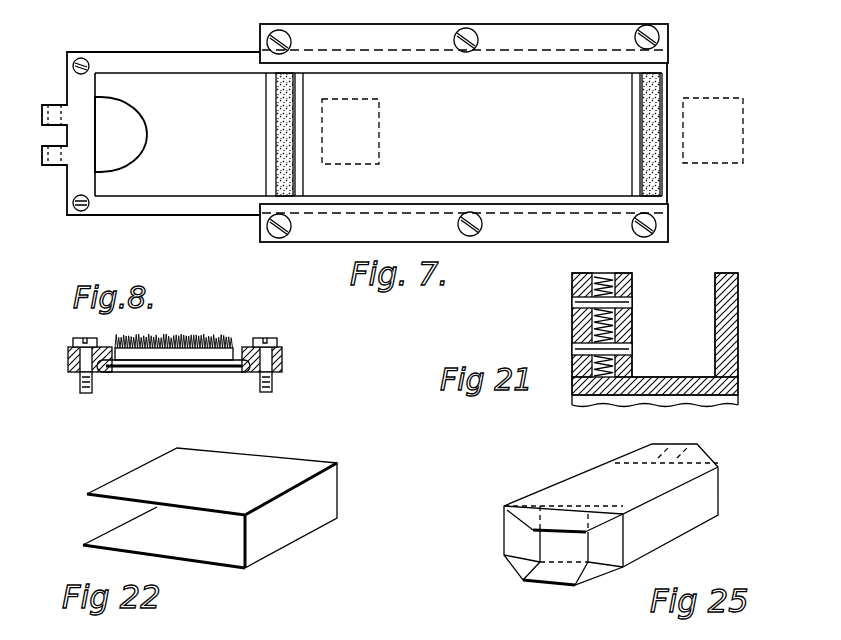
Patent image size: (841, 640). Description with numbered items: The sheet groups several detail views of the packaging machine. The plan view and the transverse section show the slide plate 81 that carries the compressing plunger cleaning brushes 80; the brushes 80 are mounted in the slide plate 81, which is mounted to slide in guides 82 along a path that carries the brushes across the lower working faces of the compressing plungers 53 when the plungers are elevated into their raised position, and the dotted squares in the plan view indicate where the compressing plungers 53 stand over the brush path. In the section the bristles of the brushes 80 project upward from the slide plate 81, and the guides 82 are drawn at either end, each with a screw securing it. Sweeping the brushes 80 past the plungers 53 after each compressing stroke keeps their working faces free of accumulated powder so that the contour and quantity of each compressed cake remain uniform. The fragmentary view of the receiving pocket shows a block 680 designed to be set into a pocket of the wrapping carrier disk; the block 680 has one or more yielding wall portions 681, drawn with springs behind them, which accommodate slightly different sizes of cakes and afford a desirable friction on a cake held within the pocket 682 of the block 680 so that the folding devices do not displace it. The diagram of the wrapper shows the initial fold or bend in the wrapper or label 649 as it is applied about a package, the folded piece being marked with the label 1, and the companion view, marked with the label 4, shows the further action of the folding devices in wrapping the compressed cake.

In FIG. 7, the compressing plunger 53 is at (379, 114).
In FIG. 7, the cleaning brush 80 is at (278, 165).
In FIG. 8, the cleaning brush 80 is at (160, 332).
In FIG. 7, the slide plate 81 is at (378, 134).
In FIG. 8, the slide plate 81 is at (217, 372).
In FIG. 7, the guide 82 is at (260, 32).
In FIG. 8, the guide 82 is at (67, 370).
In FIG. 22, the wrapper or label 649 is at (300, 450).
In FIG. 22, the clip body 1 is at (226, 515).
In FIG. 21, the block 680 is at (603, 395).
In FIG. 21, the yielding wall portion 681 is at (634, 325).
In FIG. 21, the pocket 682 is at (666, 292).
In FIG. 25, the hexagonal block 4 is at (629, 514).